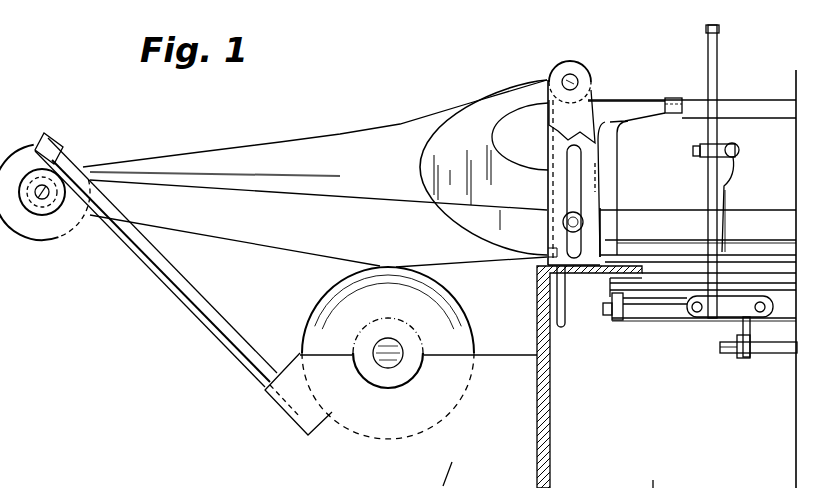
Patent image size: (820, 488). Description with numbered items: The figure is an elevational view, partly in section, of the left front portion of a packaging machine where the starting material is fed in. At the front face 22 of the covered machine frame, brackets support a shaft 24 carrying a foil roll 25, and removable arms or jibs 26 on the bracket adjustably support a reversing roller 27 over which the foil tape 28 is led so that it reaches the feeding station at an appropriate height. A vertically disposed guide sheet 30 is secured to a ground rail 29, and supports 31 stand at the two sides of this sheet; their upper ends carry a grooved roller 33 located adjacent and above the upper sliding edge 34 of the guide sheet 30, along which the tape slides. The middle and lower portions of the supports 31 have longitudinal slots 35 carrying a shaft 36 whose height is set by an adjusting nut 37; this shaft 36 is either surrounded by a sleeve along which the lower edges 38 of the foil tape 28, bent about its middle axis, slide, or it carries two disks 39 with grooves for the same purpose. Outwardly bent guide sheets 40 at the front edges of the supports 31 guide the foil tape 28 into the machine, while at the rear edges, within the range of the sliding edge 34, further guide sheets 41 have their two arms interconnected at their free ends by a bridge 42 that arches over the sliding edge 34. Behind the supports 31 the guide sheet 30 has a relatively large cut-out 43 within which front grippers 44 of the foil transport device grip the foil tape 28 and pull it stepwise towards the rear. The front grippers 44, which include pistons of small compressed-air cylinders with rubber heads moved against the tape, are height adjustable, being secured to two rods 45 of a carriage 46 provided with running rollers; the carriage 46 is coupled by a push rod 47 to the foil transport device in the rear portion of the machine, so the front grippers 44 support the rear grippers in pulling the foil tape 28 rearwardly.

The front face 22 is at (666, 377).
The shaft 24 is at (388, 362).
The foil roll 25 is at (315, 318).
The removable arms or jibs 26 is at (200, 315).
The reversing roller 27 is at (40, 215).
The foil tape 28 is at (308, 142).
The ground rail 29 is at (662, 250).
The guide sheet 30 is at (532, 117).
The supports 31 is at (563, 123).
The roller 33 is at (588, 70).
The upper sliding edge 34 is at (604, 101).
The longitudinal slots 35 is at (581, 195).
The shaft 36 is at (563, 230).
The adjusting nut 37 is at (600, 222).
The lower edges 38 is at (511, 206).
The disks 39 is at (584, 258).
The guide sheets 40 is at (498, 107).
The guide sheets 41 is at (623, 110).
The bridge 42 is at (673, 98).
The cut-out 43 is at (748, 130).
The front grippers 44 is at (738, 149).
The rods 45 is at (712, 43).
The carriage 46 is at (715, 308).
The push rod 47 is at (778, 355).